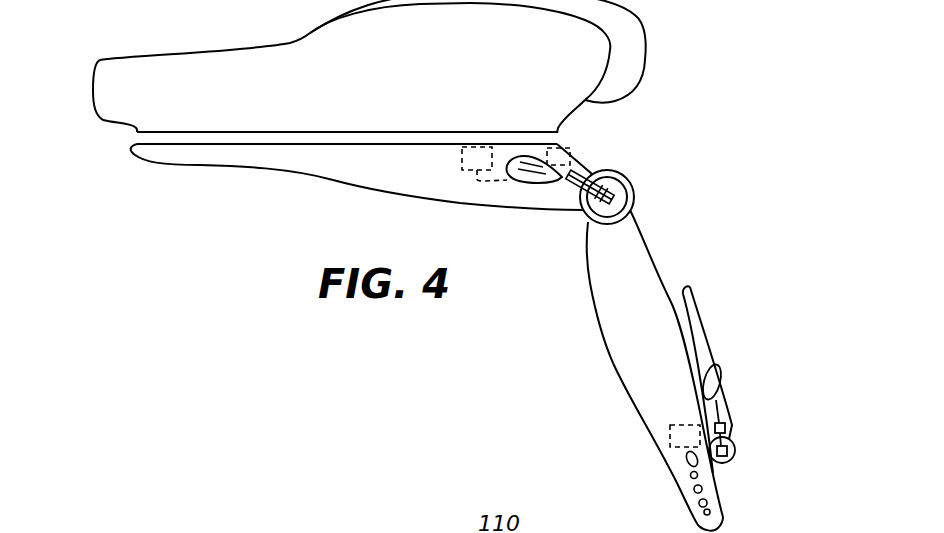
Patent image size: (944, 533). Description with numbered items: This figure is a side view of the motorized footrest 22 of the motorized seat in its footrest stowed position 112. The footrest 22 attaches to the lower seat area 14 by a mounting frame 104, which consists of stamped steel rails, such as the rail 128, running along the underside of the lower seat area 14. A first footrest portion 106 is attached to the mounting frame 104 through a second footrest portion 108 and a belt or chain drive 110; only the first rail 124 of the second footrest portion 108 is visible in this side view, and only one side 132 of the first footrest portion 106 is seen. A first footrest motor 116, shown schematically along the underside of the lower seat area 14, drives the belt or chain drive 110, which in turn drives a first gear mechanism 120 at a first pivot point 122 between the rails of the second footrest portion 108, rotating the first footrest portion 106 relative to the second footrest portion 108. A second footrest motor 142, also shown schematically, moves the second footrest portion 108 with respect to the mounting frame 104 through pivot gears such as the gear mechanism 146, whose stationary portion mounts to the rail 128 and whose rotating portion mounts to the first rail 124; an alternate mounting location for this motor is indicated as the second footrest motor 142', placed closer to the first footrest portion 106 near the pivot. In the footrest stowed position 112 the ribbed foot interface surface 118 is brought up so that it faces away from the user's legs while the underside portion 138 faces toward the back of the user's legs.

The lower seat area 14 is at (242, 67).
The mounting frame 104 is at (197, 160).
The rail of mounting portion 128 is at (400, 190).
The first footrest motor 116 is at (473, 147).
The second footrest motor 142 is at (538, 127).
The gear mechanism 146 is at (627, 173).
The belt or chain drive 110 is at (603, 187).
The motorized footrest 22 is at (598, 282).
The second footrest portion 108 is at (627, 365).
The first rail 124 is at (630, 227).
The ribbed foot interface surface 118 is at (680, 293).
The underside portion 138 is at (693, 297).
The first footrest portion 106 is at (697, 327).
The side of first footrest portion 132 is at (707, 348).
The first gear mechanism 120 is at (723, 443).
The first pivot point 122 is at (727, 463).
The second footrest motor 142' is at (650, 441).
The footrest stowed position 112 is at (730, 232).